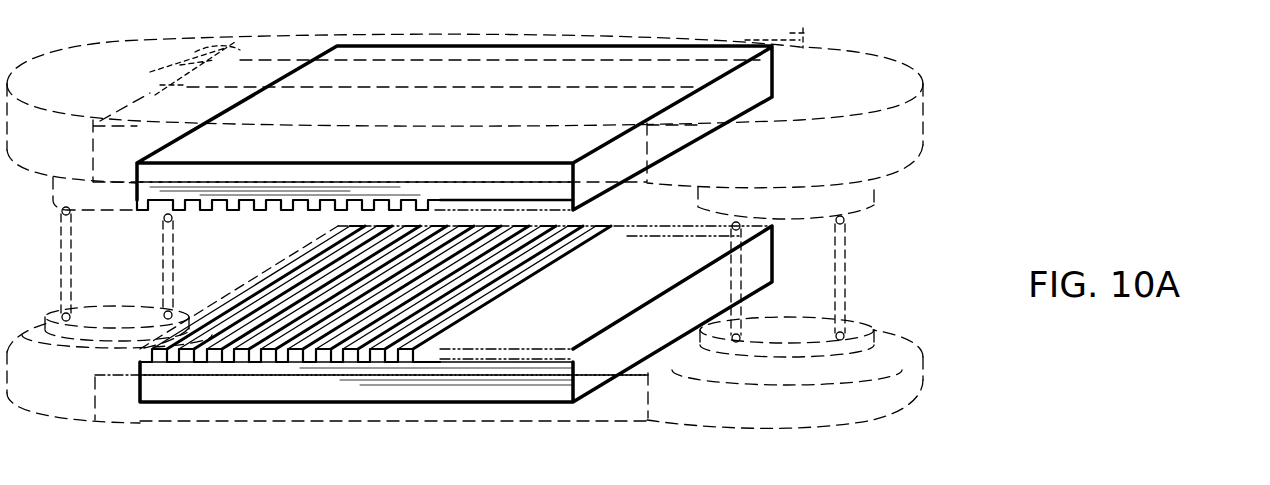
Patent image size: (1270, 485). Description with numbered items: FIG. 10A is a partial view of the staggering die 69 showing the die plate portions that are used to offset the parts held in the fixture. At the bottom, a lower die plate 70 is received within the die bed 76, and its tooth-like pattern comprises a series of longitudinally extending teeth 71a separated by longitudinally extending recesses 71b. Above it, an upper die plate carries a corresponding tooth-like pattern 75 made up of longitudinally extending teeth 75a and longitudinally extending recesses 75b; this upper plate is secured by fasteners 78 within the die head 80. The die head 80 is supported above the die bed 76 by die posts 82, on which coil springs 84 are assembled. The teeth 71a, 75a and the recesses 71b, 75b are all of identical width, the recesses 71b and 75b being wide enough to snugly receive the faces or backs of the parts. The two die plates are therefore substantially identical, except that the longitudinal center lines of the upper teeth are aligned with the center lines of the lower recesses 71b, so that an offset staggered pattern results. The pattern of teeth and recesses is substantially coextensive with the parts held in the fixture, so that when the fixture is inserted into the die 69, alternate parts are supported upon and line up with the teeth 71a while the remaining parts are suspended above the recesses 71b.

The die 69 is at (945, 105).
The lower die plate 70 is at (447, 347).
The teeth 71a is at (200, 323).
The recesses 71b is at (152, 360).
The tooth-like pattern 75 is at (454, 128).
The teeth 75a is at (143, 207).
The recesses 75b is at (241, 204).
The die bed 76 is at (612, 399).
The fasteners 78 is at (160, 67).
The die head 80 is at (471, 137).
The die posts 82 is at (92, 261).
The coil springs 84 is at (174, 256).